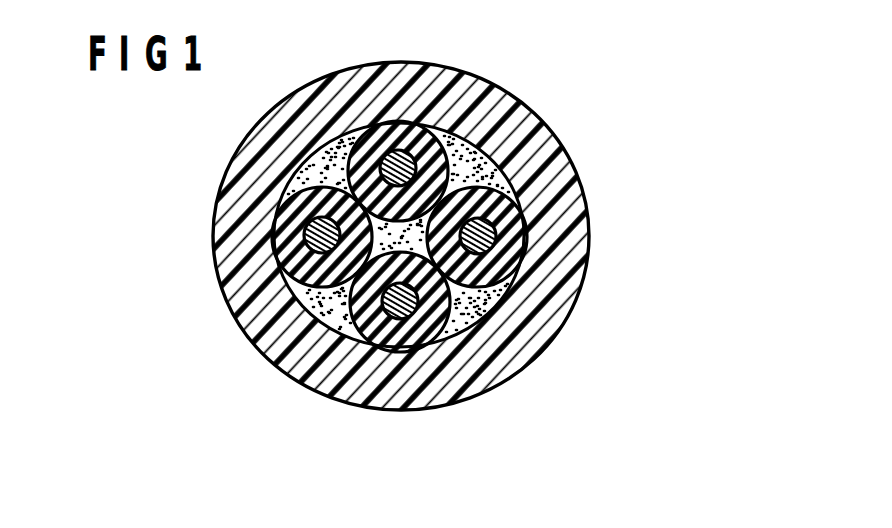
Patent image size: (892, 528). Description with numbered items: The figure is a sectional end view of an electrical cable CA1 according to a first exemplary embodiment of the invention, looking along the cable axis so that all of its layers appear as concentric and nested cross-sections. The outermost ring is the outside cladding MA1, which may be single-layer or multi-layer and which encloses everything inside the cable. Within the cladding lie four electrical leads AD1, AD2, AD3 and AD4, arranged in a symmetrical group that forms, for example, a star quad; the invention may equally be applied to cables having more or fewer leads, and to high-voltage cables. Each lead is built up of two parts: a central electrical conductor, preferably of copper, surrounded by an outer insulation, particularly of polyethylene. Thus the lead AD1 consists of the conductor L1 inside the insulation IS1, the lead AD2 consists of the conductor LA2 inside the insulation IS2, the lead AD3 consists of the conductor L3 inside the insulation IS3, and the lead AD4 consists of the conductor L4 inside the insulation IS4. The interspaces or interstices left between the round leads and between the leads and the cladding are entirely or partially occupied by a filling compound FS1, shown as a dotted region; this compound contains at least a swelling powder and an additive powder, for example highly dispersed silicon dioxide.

The electrical cable CA1 is at (611, 188).
The outside cladding MA1 is at (497, 113).
The filling compound FS1 is at (528, 153).
The electrical lead AD1 is at (402, 66).
The electrical lead AD2 is at (530, 328).
The electrical lead AD3 is at (410, 410).
The electrical lead AD4 is at (276, 237).
The outer insulation IS1 is at (472, 95).
The outer insulation IS2 is at (560, 291).
The outer insulation IS3 is at (368, 335).
The outer insulation IS4 is at (272, 288).
The electrical conductor L1 is at (397, 122).
The electrical conductor LA2 is at (588, 249).
The electrical conductor L3 is at (478, 365).
The electrical conductor L4 is at (290, 200).